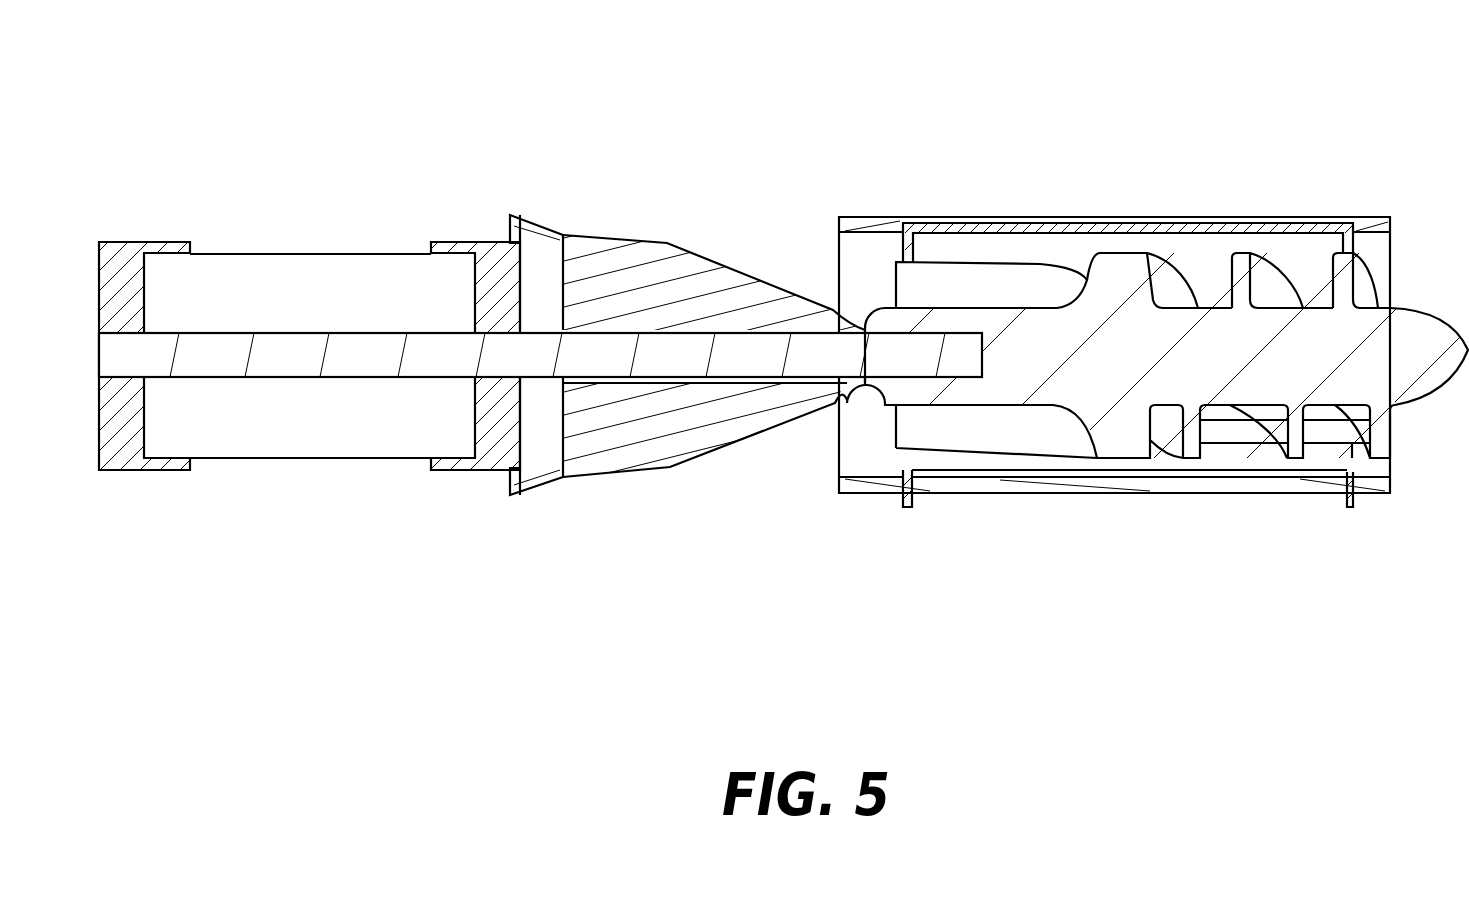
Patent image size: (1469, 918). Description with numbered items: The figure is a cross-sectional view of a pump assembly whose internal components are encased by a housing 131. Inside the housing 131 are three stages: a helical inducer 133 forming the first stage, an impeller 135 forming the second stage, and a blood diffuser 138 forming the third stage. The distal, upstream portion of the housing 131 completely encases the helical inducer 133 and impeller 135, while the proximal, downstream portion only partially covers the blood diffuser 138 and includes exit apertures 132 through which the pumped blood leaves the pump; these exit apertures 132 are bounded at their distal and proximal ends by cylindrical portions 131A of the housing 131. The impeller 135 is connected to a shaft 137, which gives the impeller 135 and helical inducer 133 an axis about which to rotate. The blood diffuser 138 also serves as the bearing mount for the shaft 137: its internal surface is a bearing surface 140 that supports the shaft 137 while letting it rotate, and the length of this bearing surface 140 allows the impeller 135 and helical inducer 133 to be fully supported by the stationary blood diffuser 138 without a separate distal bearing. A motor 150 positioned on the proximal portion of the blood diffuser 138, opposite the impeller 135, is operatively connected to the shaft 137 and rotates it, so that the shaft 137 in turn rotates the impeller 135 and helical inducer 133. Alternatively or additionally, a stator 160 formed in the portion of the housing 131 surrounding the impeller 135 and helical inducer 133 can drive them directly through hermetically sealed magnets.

The housing 131 is at (1372, 228).
The cylindrical portions 131A is at (518, 218).
The exit apertures 132 is at (791, 470).
The helical inducer 133 is at (1278, 375).
The impeller 135 is at (1030, 382).
The shaft 137 is at (567, 350).
The blood diffuser 138 is at (640, 258).
The bearing surface 140 is at (708, 380).
The motor 150 is at (230, 290).
The stator 160 is at (963, 225).